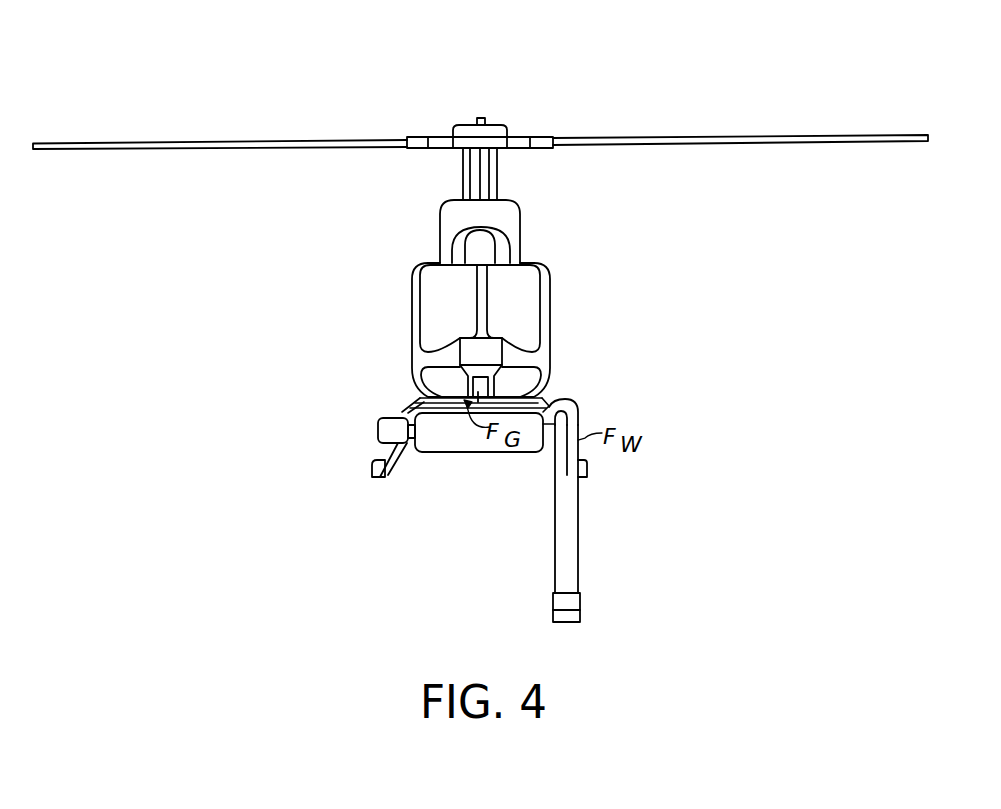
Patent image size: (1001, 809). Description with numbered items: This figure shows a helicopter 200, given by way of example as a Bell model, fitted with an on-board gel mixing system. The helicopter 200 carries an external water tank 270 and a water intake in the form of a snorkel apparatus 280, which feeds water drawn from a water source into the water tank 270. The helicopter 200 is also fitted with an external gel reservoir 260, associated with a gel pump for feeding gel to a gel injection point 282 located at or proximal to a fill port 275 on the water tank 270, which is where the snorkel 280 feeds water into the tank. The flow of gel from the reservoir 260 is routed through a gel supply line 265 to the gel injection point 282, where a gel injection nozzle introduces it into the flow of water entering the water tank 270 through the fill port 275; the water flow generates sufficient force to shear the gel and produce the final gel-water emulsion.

The helicopter 200 is at (592, 100).
The gel reservoir 260 is at (396, 432).
The gel supply line 265 is at (408, 406).
The water tank 270 is at (462, 442).
The fill port 275 is at (527, 420).
The snorkel apparatus 280 is at (570, 520).
The gel injection point 282 is at (519, 424).